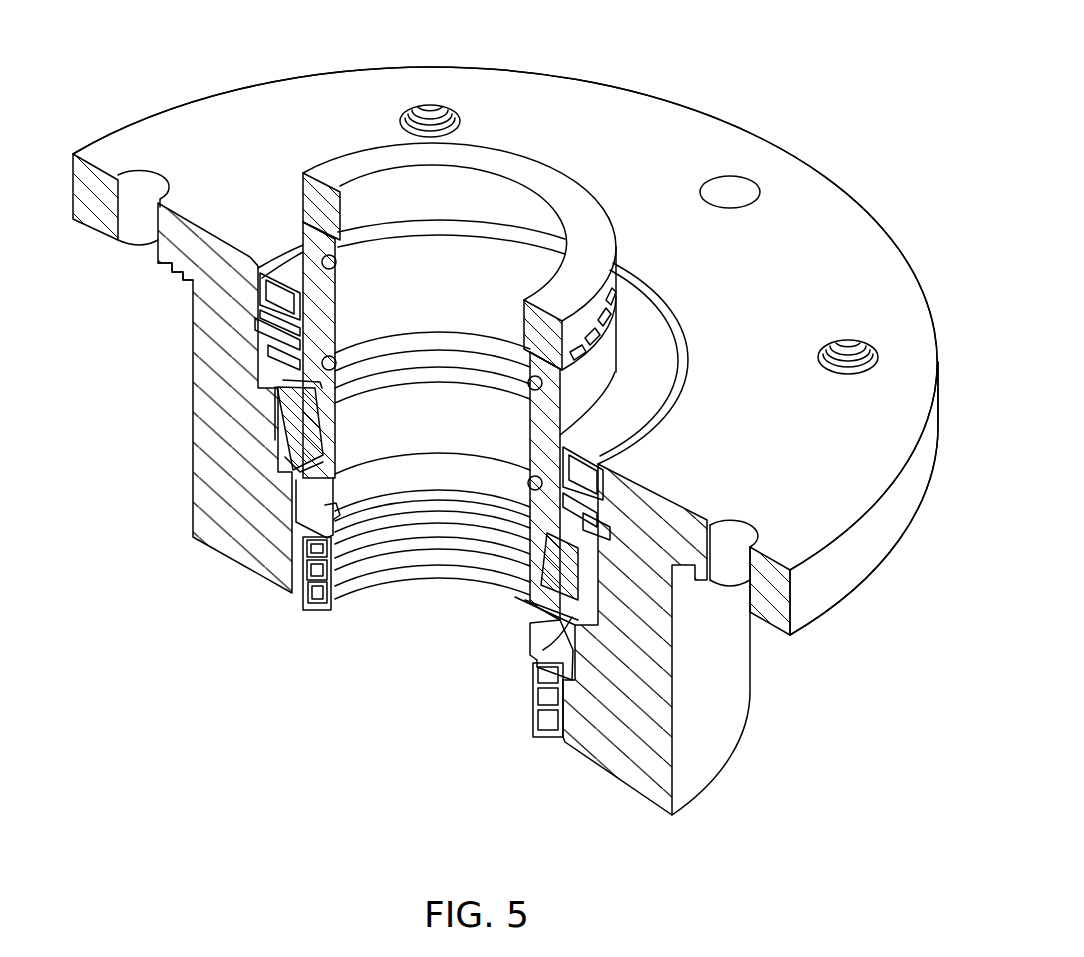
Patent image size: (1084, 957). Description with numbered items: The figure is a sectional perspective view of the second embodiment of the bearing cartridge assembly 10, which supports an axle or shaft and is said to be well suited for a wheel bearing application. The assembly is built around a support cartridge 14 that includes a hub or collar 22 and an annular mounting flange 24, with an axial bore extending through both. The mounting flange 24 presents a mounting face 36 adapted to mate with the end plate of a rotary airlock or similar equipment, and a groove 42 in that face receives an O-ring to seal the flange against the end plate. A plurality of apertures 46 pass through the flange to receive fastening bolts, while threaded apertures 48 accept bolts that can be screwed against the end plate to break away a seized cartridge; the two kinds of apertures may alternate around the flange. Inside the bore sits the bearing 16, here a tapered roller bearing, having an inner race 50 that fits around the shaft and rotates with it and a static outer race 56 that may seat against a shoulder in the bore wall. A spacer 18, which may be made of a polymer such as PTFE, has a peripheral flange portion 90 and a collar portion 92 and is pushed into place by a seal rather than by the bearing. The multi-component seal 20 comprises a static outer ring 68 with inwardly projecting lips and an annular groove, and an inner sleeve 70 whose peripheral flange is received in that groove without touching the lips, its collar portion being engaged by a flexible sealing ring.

The bearing cartridge assembly 10 is at (830, 67).
The support cartridge 14 is at (848, 191).
The bearing 16 is at (270, 428).
The spacer 18 is at (451, 536).
The multi-component seal 20 is at (312, 588).
The hub or collar 22 is at (730, 733).
The annular mounting flange 24 is at (864, 558).
The mounting face 36 is at (105, 226).
The groove 42 is at (180, 274).
The apertures 46 is at (730, 182).
The threaded apertures 48 is at (430, 106).
The inner race 50 is at (326, 413).
The outer race 56 is at (268, 387).
The outer ring 68 is at (310, 576).
The inner sleeve 70 is at (407, 553).
The peripheral flange portion 90 is at (313, 540).
The collar portion 92 is at (330, 560).